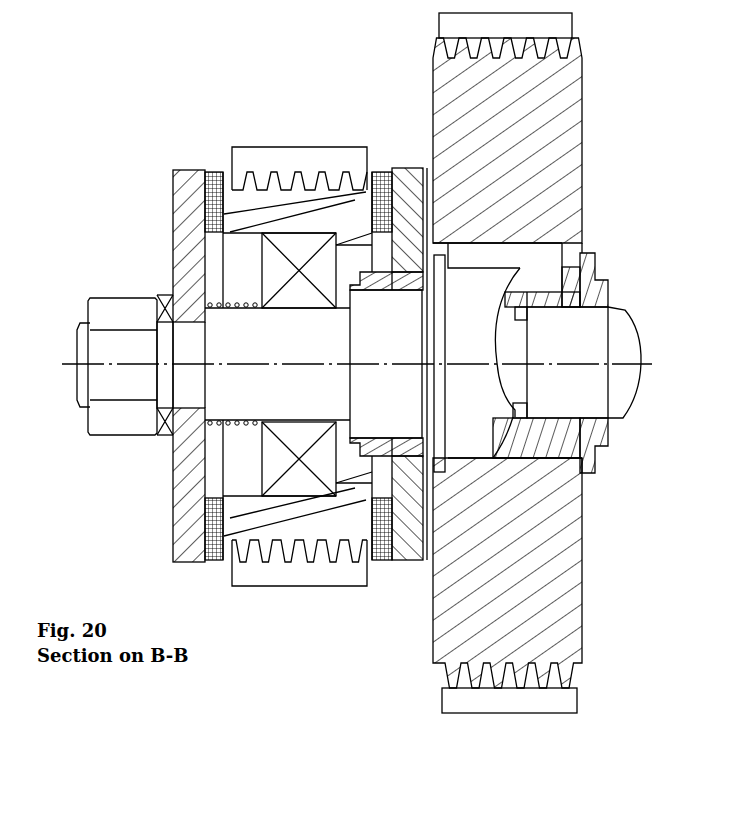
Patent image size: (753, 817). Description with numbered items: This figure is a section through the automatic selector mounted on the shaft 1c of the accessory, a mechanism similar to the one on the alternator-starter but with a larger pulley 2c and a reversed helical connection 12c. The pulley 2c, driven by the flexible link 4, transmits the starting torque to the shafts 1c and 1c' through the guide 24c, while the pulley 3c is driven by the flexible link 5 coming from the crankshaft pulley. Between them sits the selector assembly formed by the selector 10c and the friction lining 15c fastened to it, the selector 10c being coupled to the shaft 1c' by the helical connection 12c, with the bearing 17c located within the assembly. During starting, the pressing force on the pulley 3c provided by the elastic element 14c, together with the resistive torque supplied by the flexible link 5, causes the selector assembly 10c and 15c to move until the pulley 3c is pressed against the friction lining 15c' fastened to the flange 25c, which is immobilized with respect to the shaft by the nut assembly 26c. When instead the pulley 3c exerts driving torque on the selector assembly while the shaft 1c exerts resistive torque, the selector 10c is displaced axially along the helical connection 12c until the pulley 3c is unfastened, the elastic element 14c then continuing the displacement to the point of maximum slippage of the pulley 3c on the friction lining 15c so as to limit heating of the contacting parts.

The shaft of accessory 1c is at (612, 361).
The shaft 1c' is at (555, 369).
The pulley 2c is at (537, 190).
The pulley 3c is at (343, 175).
The flexible link 4 is at (513, 32).
The flexible link 5 is at (303, 567).
The selector 10c is at (403, 172).
The helical connection 12c is at (400, 443).
The elastic element 14c is at (240, 310).
The friction lining 15c is at (371, 468).
The friction lining 15c' is at (260, 401).
The roller bearing 17c is at (300, 252).
The guide 24c is at (537, 263).
The flange 25c is at (197, 188).
The nut assembly 26c is at (157, 295).